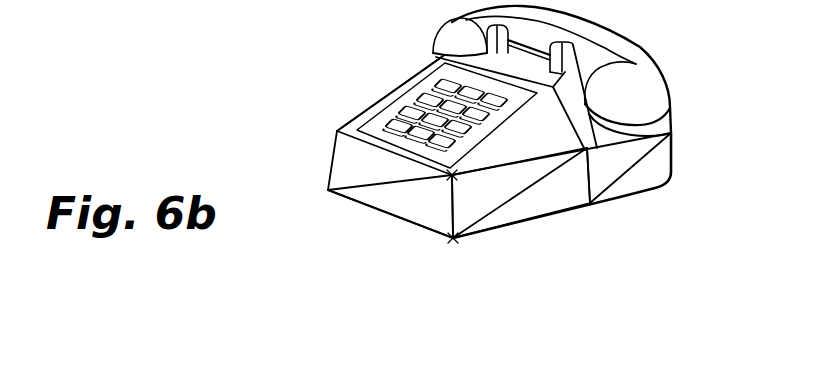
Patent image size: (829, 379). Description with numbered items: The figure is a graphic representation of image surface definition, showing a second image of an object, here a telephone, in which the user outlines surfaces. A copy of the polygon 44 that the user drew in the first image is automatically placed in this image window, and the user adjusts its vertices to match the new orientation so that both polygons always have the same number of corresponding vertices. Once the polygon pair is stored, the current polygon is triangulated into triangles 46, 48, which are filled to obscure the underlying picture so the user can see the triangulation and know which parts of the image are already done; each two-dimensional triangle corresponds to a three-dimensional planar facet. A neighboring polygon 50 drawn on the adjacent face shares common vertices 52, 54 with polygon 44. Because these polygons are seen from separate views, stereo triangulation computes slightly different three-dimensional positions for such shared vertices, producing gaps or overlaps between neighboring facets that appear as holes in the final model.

The polygon 44 is at (376, 232).
The triangle 46 is at (334, 150).
The triangle 48 is at (418, 226).
The polygon 50 is at (518, 233).
The common vertex 52 is at (453, 175).
The common vertex 54 is at (455, 238).